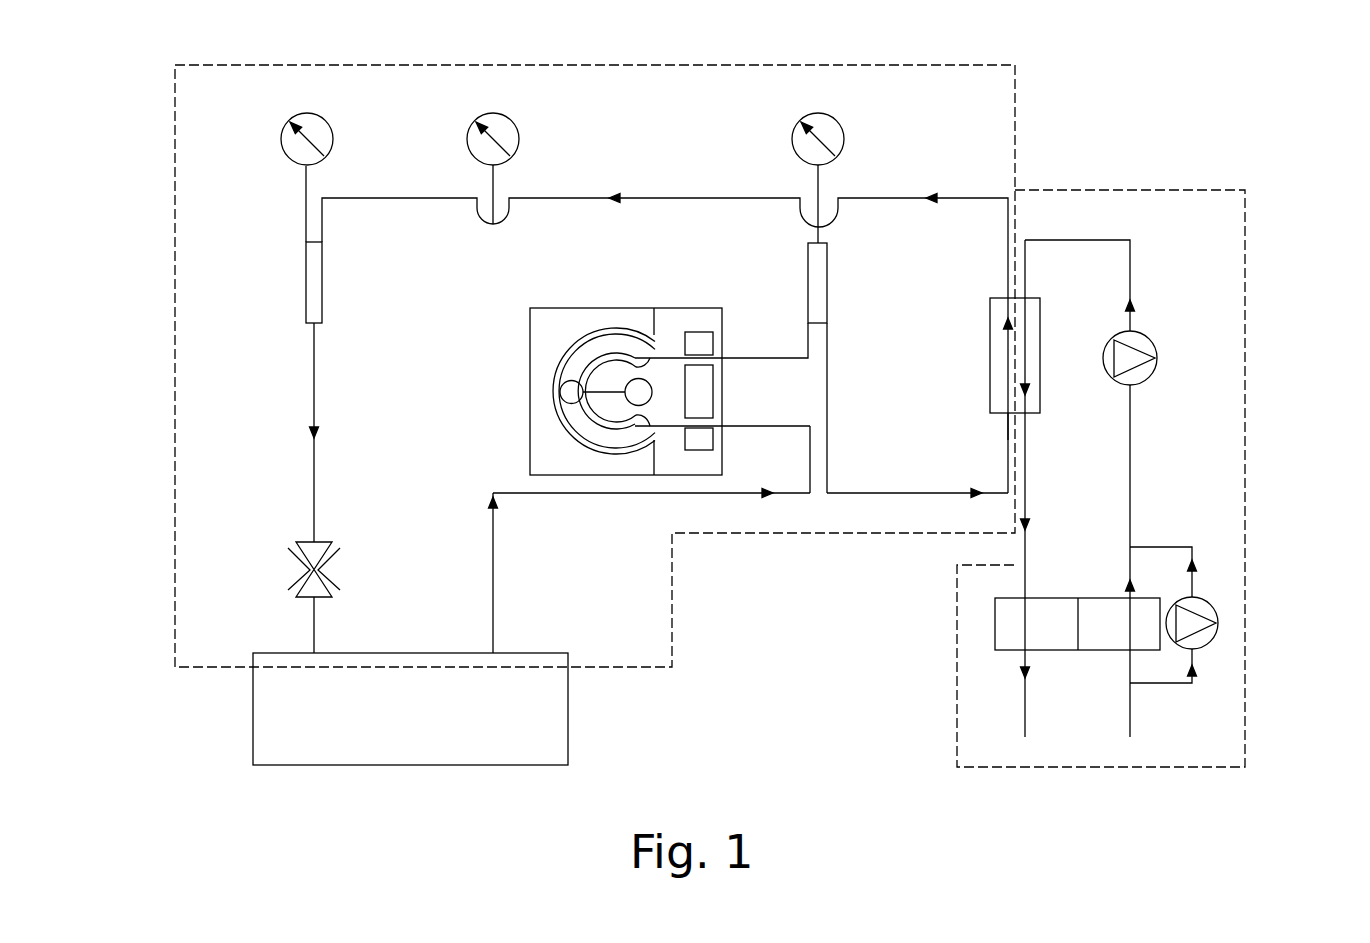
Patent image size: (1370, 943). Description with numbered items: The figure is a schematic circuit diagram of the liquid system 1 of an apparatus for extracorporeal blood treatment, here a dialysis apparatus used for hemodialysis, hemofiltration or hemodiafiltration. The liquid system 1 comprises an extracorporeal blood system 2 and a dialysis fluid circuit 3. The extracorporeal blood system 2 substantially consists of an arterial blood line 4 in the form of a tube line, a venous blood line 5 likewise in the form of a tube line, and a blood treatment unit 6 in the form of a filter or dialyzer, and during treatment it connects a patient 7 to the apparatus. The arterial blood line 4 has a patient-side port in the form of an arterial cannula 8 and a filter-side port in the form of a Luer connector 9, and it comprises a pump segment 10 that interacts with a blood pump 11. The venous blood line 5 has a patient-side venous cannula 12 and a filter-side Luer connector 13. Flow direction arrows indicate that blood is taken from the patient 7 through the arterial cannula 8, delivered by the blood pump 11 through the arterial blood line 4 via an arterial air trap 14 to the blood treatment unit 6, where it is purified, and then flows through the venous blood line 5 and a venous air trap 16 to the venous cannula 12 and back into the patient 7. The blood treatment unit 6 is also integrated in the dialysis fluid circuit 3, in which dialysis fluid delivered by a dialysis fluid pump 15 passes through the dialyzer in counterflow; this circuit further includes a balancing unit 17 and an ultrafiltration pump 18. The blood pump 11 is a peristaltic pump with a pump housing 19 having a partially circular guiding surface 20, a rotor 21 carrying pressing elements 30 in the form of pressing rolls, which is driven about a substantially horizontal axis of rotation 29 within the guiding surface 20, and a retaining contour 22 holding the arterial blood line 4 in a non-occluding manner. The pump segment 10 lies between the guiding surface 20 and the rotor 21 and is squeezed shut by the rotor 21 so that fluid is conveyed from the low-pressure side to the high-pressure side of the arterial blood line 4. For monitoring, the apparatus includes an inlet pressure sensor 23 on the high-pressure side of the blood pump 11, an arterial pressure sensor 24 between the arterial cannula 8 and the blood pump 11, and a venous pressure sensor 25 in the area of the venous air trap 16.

The liquid system 1 is at (1218, 115).
The extracorporeal blood system 2 is at (942, 66).
The dialysis fluid circuit 3 is at (1245, 247).
The arterial blood line 4 is at (665, 495).
The venous blood line 5 is at (640, 198).
The blood treatment unit 6 is at (990, 315).
The patient 7 is at (268, 765).
The arterial cannula 8 is at (493, 667).
The Luer connector 9 is at (1003, 417).
The pump segment 10 is at (652, 393).
The blood pump 11 is at (545, 500).
The venous cannula 12 is at (314, 667).
The Luer connector 13 is at (1008, 298).
The arterial air trap 14 is at (808, 300).
The dialysis fluid pump 15 is at (1157, 358).
The venous air trap 16 is at (306, 285).
The balancing unit 17 is at (995, 650).
The ultrafiltration pump 18 is at (1217, 623).
The pump housing 19 is at (543, 437).
The partially circular guiding surface 20 is at (565, 342).
The rotor 21 is at (603, 396).
The retaining contour 22 is at (707, 452).
The inlet pressure sensor 23 is at (818, 113).
The arterial pressure sensor 24 is at (519, 139).
The venous pressure sensor 25 is at (333, 139).
The axis of rotation 29 is at (608, 378).
The pressing elements 30 is at (640, 379).